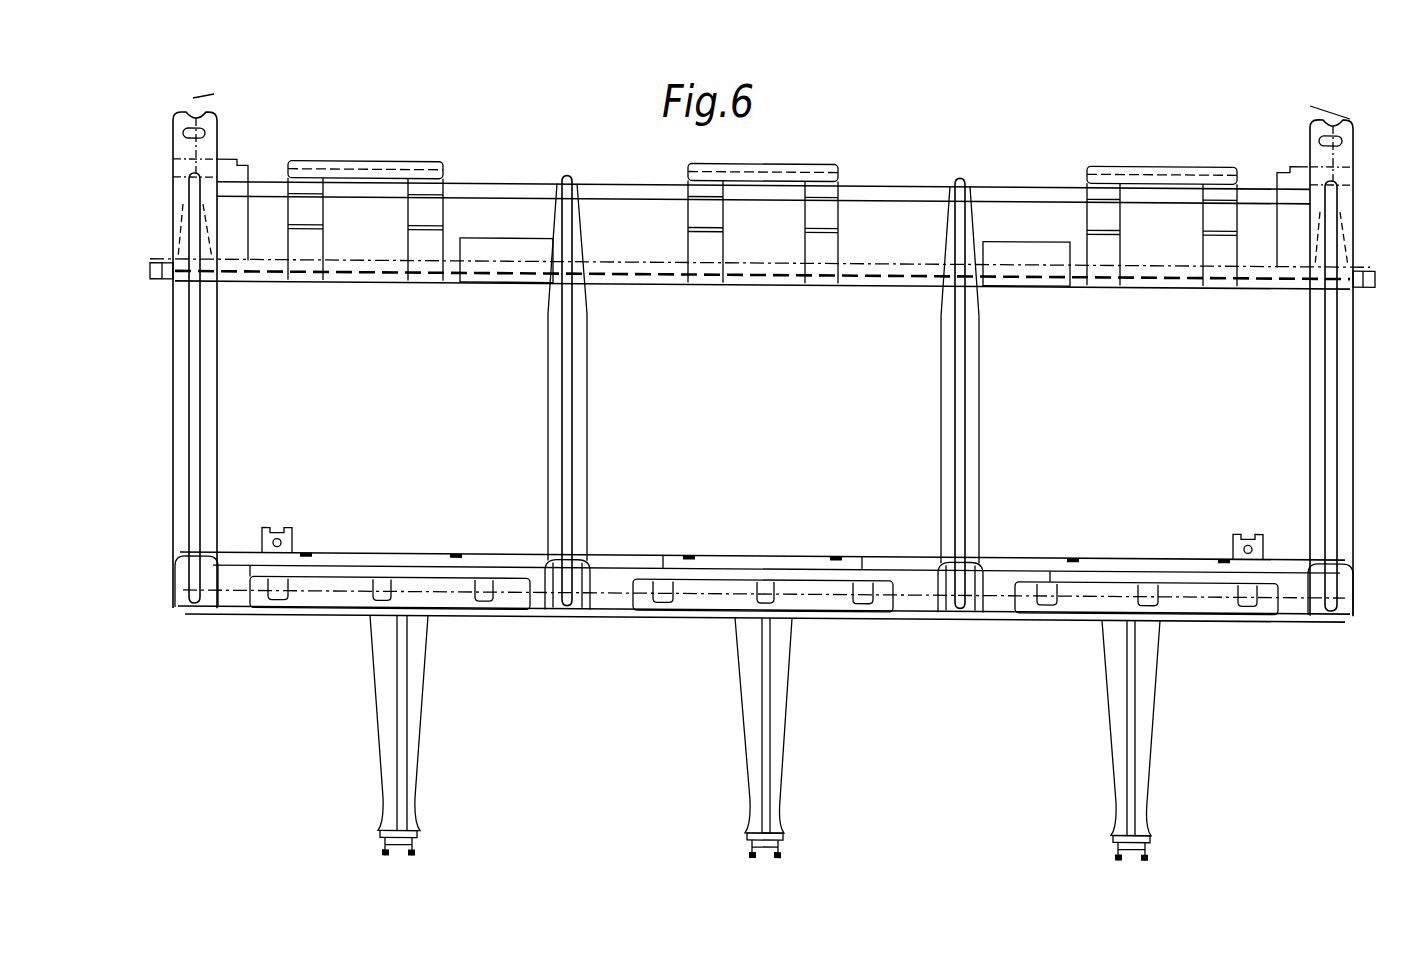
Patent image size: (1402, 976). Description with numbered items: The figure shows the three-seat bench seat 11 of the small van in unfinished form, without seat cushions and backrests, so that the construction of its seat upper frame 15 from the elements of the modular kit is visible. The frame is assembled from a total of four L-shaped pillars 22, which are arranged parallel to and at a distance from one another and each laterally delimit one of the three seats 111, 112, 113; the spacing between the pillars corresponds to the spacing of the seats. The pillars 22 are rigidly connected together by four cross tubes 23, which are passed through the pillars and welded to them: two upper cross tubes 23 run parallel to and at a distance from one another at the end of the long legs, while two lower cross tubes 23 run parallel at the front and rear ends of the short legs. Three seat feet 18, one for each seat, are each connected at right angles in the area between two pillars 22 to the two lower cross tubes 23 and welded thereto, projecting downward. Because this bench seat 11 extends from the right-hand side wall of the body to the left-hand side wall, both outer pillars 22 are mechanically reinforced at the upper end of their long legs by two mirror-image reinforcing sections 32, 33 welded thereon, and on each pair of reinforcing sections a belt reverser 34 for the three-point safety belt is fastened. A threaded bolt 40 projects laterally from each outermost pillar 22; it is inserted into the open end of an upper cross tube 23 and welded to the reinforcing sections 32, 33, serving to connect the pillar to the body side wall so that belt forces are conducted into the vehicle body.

The three-seat bench seat 11 is at (985, 126).
The seat upper frame 15 is at (1037, 212).
The seat foot 18 is at (413, 710).
The L-shaped pillar 22 is at (205, 351).
The cross tube 23 is at (887, 195).
The reinforcing section 32 is at (175, 133).
The reinforcing section 33 is at (211, 146).
The belt reverser 34 is at (196, 97).
The threaded bolt 40 is at (156, 263).
The seat 111 is at (401, 429).
The seat 112 is at (783, 429).
The seat 113 is at (1165, 429).